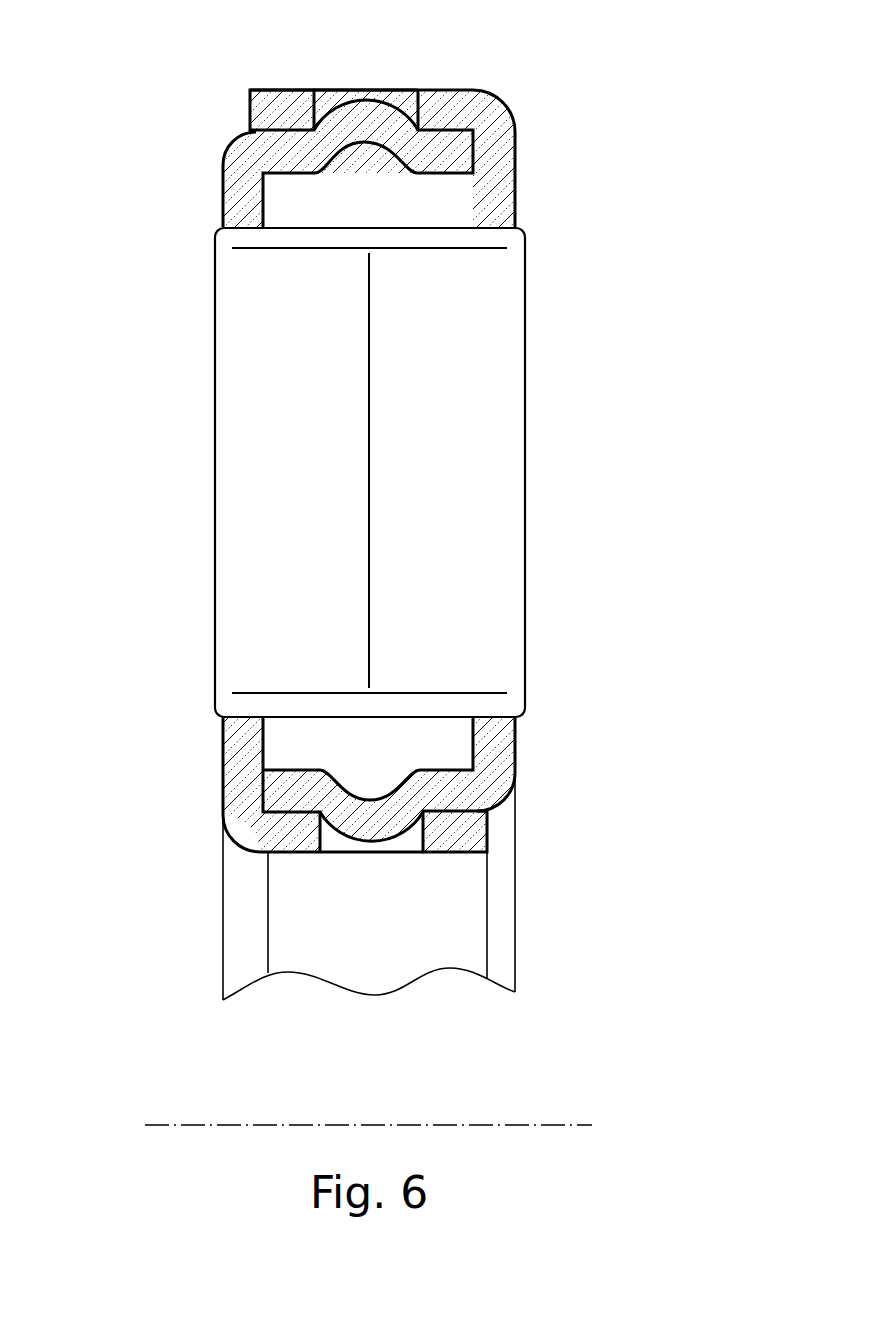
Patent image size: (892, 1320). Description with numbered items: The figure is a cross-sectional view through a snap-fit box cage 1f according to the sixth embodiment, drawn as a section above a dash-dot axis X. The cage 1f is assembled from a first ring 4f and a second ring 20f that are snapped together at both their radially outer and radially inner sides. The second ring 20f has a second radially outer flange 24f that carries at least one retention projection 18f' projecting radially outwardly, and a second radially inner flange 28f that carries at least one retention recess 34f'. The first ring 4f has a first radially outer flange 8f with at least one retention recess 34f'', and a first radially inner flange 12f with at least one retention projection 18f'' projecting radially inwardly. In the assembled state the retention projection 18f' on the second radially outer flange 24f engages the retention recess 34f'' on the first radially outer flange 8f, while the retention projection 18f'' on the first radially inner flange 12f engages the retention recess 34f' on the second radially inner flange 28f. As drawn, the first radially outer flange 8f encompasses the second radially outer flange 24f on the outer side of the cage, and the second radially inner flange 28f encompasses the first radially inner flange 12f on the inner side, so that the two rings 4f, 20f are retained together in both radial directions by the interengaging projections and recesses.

The snap-fit box cage 1f is at (385, 500).
The first ring 4f is at (526, 731).
The first radially outer flange 8f is at (272, 100).
The first radially inner flange 12f is at (288, 793).
The retention projection 18f' is at (372, 86).
The retention projection 18f'' is at (371, 854).
The second ring 20f is at (214, 191).
The second radially outer flange 24f is at (448, 155).
The second radially inner flange 28f is at (463, 832).
The retention recess 34f' is at (391, 889).
The retention recess 34f'' is at (346, 52).
The axis X is at (552, 1125).